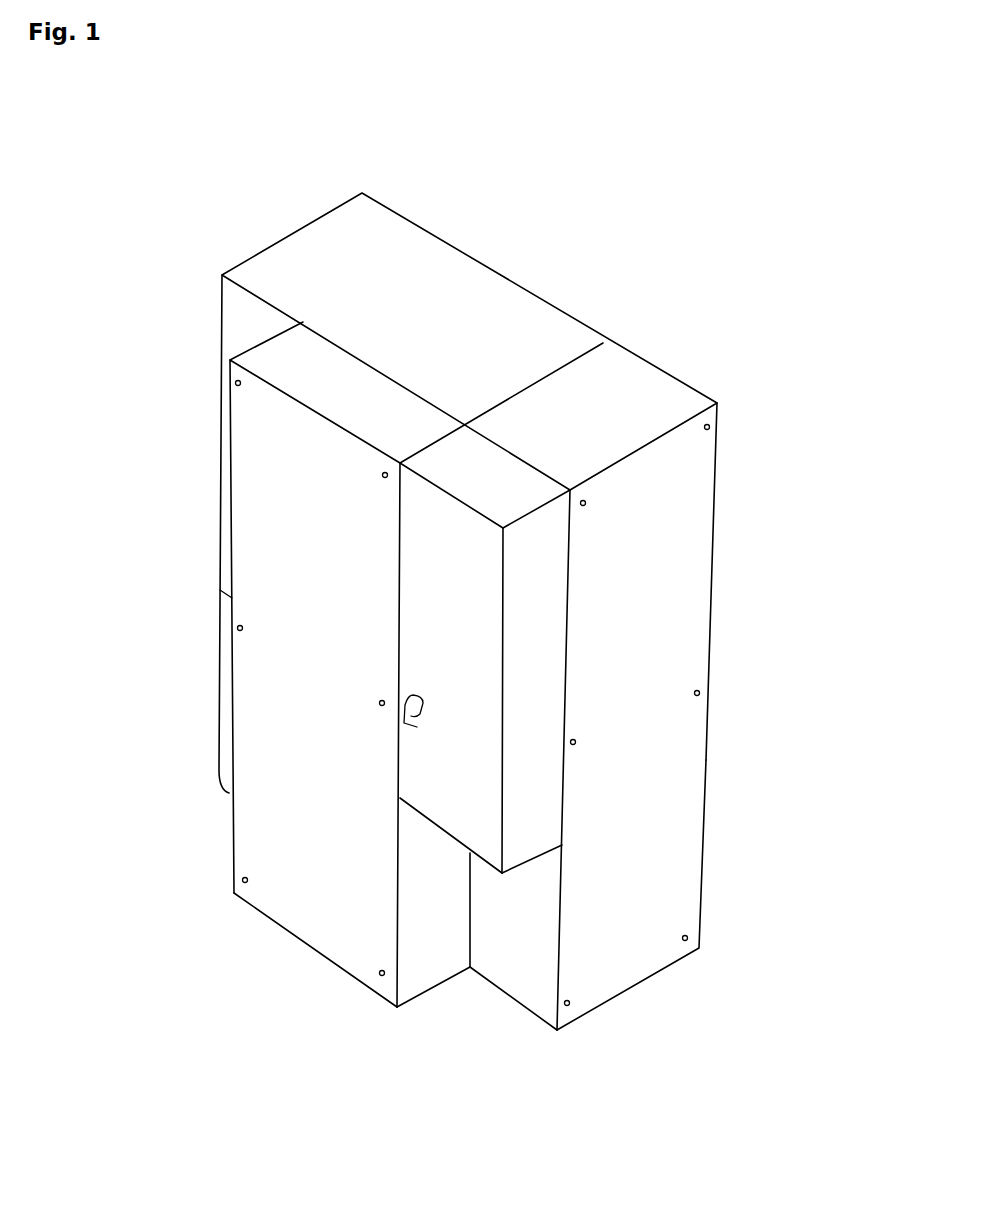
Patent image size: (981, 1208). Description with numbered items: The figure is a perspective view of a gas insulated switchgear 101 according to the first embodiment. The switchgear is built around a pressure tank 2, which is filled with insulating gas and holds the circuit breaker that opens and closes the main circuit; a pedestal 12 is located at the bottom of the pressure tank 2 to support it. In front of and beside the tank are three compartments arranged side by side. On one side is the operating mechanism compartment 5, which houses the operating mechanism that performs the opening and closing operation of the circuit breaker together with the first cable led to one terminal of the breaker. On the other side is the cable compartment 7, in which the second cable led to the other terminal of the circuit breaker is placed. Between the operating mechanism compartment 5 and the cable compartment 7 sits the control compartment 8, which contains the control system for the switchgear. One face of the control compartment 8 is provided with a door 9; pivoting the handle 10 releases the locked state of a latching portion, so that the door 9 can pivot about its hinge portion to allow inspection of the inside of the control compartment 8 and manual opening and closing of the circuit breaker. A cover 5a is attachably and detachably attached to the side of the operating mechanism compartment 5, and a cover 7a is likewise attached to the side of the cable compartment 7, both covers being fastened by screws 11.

The gas insulated switchgear 101 is at (620, 231).
The pressure tank 2 is at (398, 242).
The operating mechanism compartment 5 is at (647, 382).
The cover 5a is at (685, 845).
The cable compartment 7 is at (270, 355).
The cover 7a is at (252, 825).
The control compartment 8 is at (515, 500).
The door 9 is at (475, 630).
The handle 10 is at (418, 727).
The screws 11 is at (238, 895).
The pedestal 12 is at (218, 629).